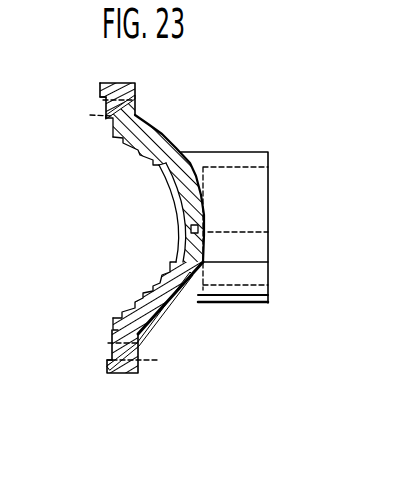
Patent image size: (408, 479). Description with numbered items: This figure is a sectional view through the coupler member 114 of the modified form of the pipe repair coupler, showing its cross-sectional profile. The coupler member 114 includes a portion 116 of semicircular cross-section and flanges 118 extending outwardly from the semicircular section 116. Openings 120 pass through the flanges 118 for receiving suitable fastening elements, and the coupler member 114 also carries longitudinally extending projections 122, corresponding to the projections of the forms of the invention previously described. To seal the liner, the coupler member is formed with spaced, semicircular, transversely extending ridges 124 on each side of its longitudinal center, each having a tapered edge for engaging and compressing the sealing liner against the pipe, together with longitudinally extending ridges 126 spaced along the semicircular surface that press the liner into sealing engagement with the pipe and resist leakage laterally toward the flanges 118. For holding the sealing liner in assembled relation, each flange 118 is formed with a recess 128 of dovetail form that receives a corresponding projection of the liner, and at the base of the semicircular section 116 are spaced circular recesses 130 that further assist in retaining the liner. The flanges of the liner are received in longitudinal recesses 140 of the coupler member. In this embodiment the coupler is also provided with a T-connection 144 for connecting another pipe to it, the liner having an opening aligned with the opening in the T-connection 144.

The coupler member 114 is at (158, 138).
The portion of semicircular cross-section 116 is at (172, 306).
The flanges 118 is at (143, 65).
The openings 120 is at (135, 110).
The longitudinally extending projections 122 is at (100, 86).
The transversely extending ridges 124 is at (176, 212).
The longitudinally extending ridges 126 is at (172, 166).
The recess 128 is at (90, 115).
The circular recesses 130 is at (200, 228).
The longitudinal recesses 140 is at (112, 126).
The T-connection 144 is at (232, 152).